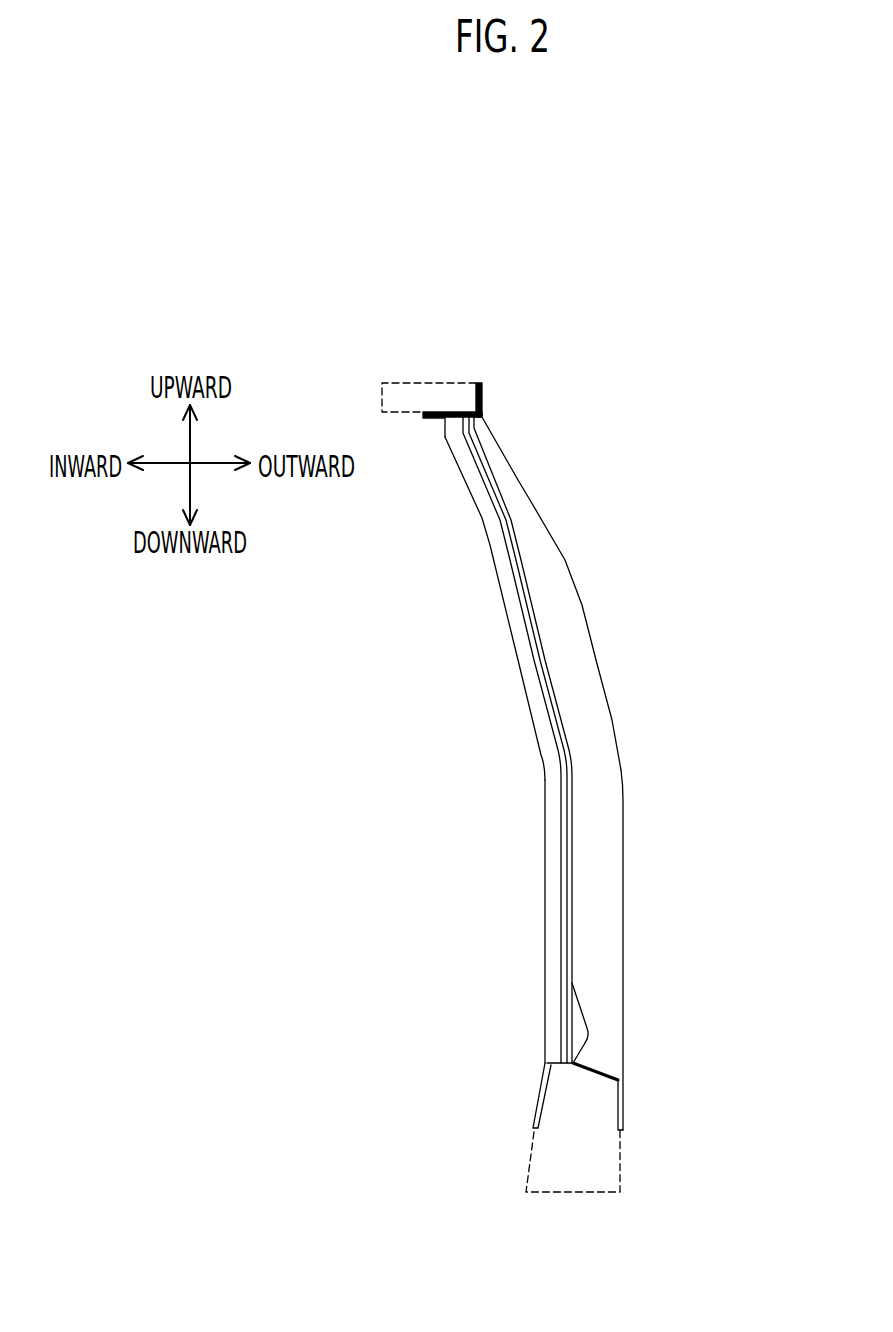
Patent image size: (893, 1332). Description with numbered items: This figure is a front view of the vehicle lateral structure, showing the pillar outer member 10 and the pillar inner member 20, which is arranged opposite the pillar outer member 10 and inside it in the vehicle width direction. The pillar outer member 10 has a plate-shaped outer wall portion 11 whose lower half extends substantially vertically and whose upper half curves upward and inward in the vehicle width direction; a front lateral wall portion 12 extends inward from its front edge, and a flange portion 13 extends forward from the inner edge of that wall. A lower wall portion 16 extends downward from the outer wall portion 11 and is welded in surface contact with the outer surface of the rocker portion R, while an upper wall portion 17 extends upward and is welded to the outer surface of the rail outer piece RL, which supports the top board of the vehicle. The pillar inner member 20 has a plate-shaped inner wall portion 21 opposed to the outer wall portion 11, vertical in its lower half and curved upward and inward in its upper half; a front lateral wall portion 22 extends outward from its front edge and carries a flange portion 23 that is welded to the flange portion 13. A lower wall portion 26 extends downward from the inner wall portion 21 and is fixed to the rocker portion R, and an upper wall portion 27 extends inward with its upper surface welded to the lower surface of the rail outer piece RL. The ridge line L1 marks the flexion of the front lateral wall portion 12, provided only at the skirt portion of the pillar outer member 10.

The pillar outer member 10 is at (580, 758).
The outer wall portion 11 is at (600, 672).
The front lateral wall portion 12 is at (605, 860).
The flange portion 13 is at (572, 795).
The lower wall portion 16 is at (623, 1110).
The upper wall portion 17 is at (482, 395).
The pillar inner member 20 is at (504, 770).
The inner wall portion 21 is at (527, 700).
The front lateral wall portion 22 is at (548, 807).
The flange portion 23 is at (567, 880).
The lower wall portion 26 is at (535, 1098).
The upper wall portion 27 is at (433, 420).
The ridge line L1 is at (588, 1033).
The rocker portion R is at (620, 1160).
The rail outer piece RL is at (422, 383).